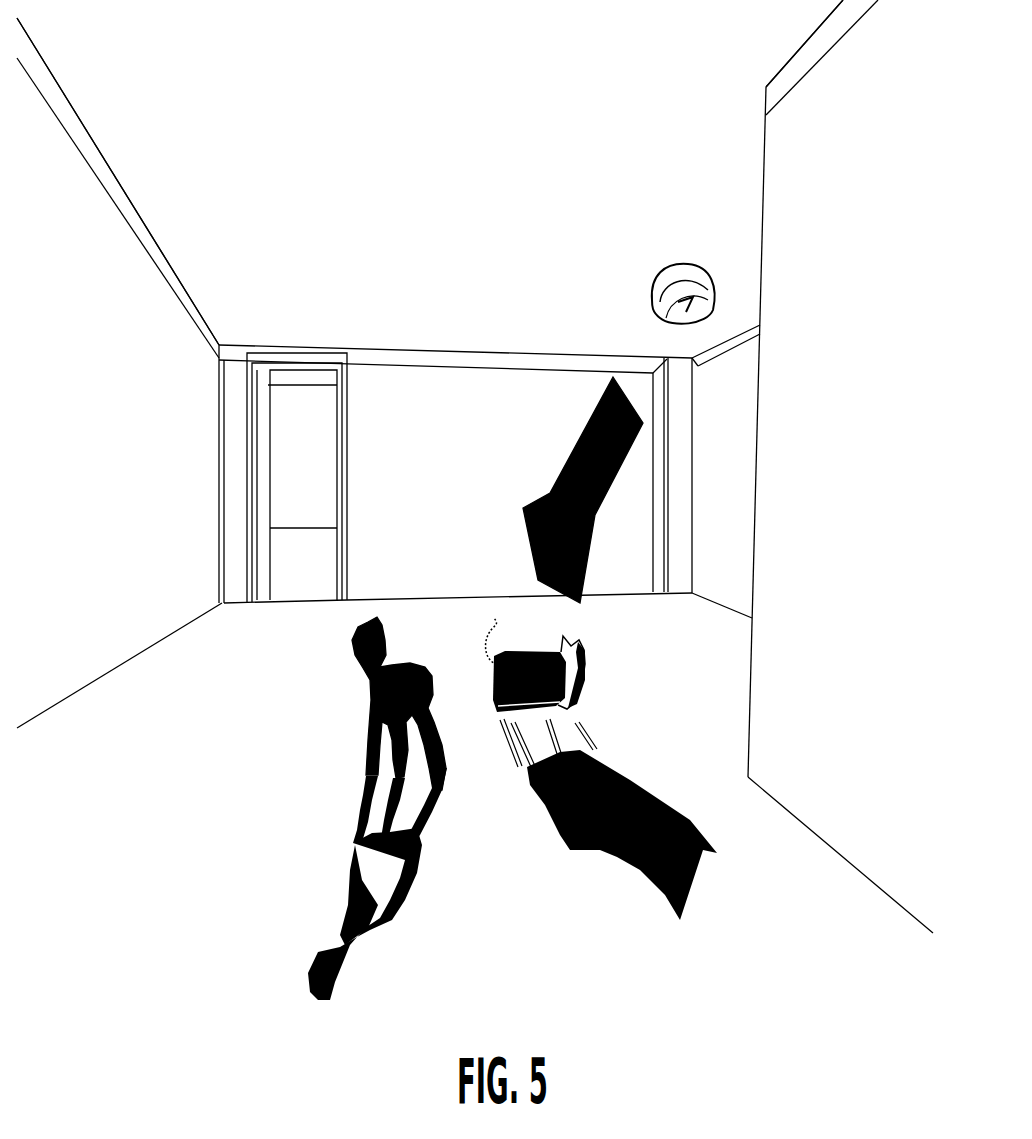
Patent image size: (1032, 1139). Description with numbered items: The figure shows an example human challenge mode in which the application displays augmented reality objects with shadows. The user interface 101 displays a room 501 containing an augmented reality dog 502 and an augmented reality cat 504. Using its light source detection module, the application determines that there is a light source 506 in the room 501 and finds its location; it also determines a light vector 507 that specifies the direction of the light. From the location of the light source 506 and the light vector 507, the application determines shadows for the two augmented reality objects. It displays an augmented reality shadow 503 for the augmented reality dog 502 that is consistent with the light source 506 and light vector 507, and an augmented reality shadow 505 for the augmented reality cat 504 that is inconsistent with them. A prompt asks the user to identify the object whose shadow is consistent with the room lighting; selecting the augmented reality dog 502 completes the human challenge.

The user interface 101 is at (260, 218).
The room 501 is at (196, 503).
The augmented reality dog 502 is at (350, 699).
The augmented reality shadow 503 is at (333, 889).
The augmented reality cat 504 is at (478, 665).
The augmented reality shadow 505 is at (608, 866).
The light source 506 is at (646, 290).
The light vector 507 is at (553, 466).